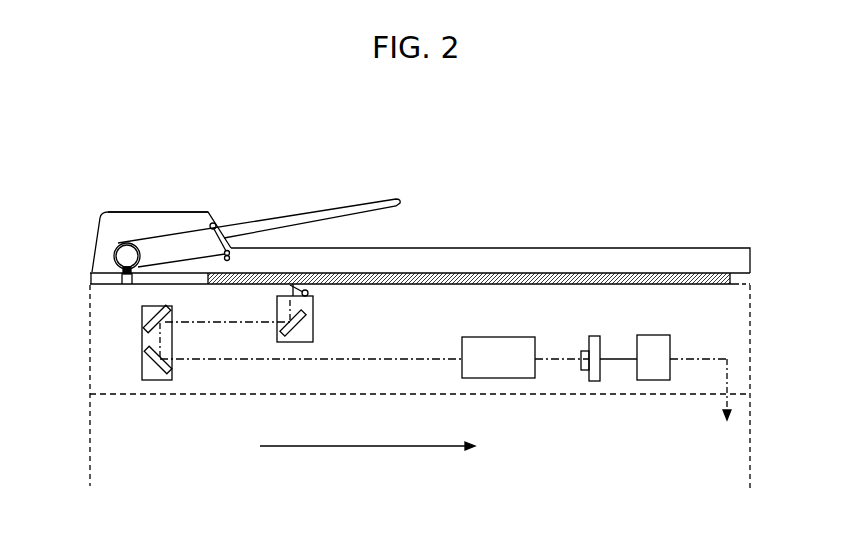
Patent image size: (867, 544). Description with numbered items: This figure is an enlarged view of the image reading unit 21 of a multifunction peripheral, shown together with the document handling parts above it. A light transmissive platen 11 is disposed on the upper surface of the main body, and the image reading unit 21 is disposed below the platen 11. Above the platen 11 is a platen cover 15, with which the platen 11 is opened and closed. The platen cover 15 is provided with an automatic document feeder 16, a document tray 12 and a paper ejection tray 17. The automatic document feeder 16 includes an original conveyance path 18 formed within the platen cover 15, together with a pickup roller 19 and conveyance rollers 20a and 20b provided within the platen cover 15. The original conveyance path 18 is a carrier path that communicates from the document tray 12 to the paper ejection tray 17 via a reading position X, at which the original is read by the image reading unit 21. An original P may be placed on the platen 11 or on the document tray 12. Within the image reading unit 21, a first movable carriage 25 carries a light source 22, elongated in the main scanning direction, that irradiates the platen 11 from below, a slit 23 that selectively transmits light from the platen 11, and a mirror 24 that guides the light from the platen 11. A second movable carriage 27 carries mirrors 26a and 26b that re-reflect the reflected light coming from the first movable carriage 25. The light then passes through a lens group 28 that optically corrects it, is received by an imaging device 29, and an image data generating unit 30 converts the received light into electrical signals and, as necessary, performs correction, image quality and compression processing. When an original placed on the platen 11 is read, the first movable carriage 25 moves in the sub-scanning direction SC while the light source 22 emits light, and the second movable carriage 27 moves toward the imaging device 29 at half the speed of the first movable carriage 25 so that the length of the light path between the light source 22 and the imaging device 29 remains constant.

The platen 11 is at (738, 282).
The document tray 12 is at (388, 198).
The platen cover 15 is at (675, 247).
The automatic document feeder 16 is at (190, 212).
The paper ejection tray 17 is at (357, 247).
The original conveyance path 18 is at (142, 238).
The pickup roller 19 is at (214, 223).
The conveyance roller 20a is at (117, 244).
The conveyance roller 20b is at (230, 257).
The image reading unit 21 is at (750, 321).
The light source 22 is at (308, 292).
The slit 23 is at (280, 298).
The mirror 24 is at (300, 328).
The first movable carriage 25 is at (315, 327).
The mirror 26a is at (142, 310).
The mirror 26b is at (158, 380).
The second movable carriage 27 is at (142, 352).
The lens group 28 is at (525, 382).
The imaging device 29 is at (595, 382).
The image data generating unit 30 is at (655, 382).
The reading position X is at (98, 270).
The original P is at (478, 277).
The sub-scanning direction SC is at (367, 461).